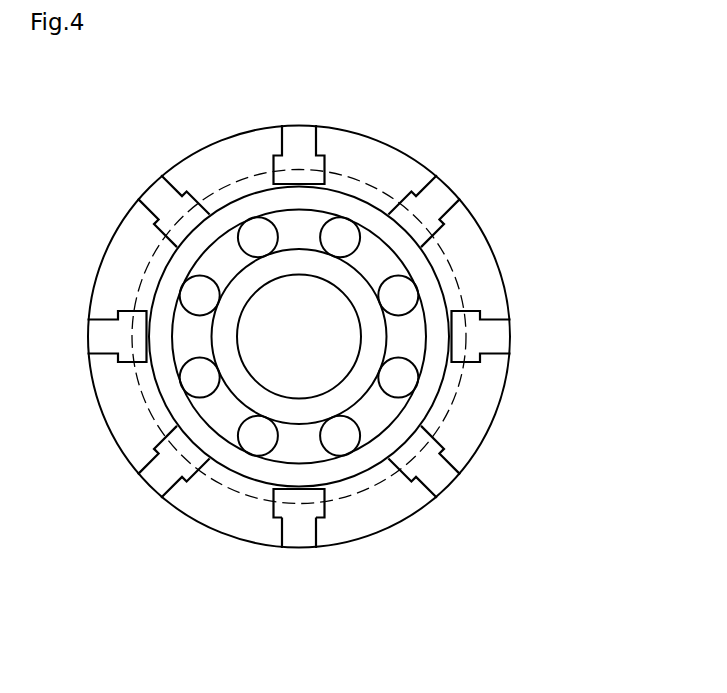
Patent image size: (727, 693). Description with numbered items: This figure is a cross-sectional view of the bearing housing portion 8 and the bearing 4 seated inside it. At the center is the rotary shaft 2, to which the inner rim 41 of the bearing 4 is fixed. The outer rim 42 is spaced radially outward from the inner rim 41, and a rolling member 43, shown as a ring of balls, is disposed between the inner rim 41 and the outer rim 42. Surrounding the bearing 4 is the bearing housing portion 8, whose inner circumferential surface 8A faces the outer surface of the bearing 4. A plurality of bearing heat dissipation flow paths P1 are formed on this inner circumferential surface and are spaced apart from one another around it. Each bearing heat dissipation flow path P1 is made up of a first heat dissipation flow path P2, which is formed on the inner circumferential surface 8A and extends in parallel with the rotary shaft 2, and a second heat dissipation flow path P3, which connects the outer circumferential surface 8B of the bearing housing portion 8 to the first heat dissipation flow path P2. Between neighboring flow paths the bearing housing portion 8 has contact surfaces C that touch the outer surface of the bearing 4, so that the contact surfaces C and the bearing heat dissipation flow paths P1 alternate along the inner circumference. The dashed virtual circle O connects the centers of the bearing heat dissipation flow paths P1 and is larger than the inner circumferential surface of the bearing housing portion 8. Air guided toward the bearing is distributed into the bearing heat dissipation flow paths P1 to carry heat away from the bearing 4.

The rotary shaft 2 is at (282, 295).
The bearing 4 is at (390, 337).
The inner rim 41 is at (355, 288).
The outer rim 42 is at (443, 338).
The rolling member 43 is at (405, 293).
The bearing housing portion 8 is at (320, 393).
The inner circumferential surface 8A is at (450, 425).
The outer circumferential surface 8B is at (447, 408).
The virtual circle O is at (143, 270).
The contact surface C is at (147, 401).
The bearing heat dissipation flow path P1 is at (291, 575).
The first heat dissipation flow path P2 is at (280, 507).
The second heat dissipation flow path P3 is at (299, 538).